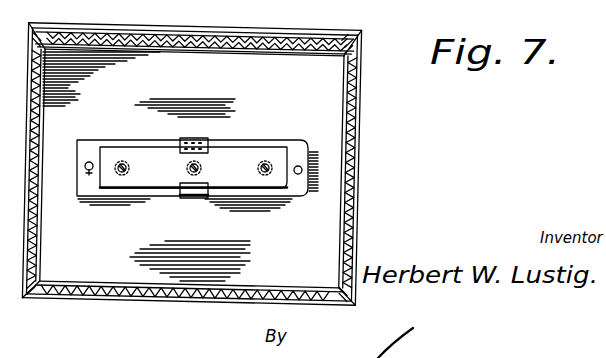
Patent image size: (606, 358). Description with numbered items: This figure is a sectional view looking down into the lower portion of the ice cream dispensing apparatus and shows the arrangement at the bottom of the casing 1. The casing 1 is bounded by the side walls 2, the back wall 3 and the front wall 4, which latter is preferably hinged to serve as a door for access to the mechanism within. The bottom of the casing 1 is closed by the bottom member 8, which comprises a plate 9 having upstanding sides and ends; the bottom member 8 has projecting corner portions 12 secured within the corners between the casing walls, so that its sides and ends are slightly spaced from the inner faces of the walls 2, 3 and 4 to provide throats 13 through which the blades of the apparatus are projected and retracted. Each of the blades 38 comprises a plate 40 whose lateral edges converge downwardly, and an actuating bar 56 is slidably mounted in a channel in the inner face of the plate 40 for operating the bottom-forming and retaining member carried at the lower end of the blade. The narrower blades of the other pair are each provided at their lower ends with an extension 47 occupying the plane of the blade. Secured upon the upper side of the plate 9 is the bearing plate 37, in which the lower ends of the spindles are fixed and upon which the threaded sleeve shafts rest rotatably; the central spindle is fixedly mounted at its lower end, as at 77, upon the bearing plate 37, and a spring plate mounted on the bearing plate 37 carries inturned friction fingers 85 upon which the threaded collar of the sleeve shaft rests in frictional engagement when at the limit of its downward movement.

The casing 1 is at (365, 104).
The side walls 2 is at (357, 208).
The back wall 3 is at (257, 295).
The front wall 4 is at (270, 33).
The bottom member 8 is at (327, 244).
The plate 9 is at (313, 265).
The projecting corner portions 12 is at (364, 42).
The throats 13 is at (333, 44).
The bearing plate 37 is at (296, 153).
The blades 38 is at (149, 297).
The plate 40 is at (228, 302).
The extension 47 is at (361, 174).
The actuating bar 56 is at (192, 301).
The anchored lower end 77 is at (201, 168).
The friction fingers 85 is at (208, 141).